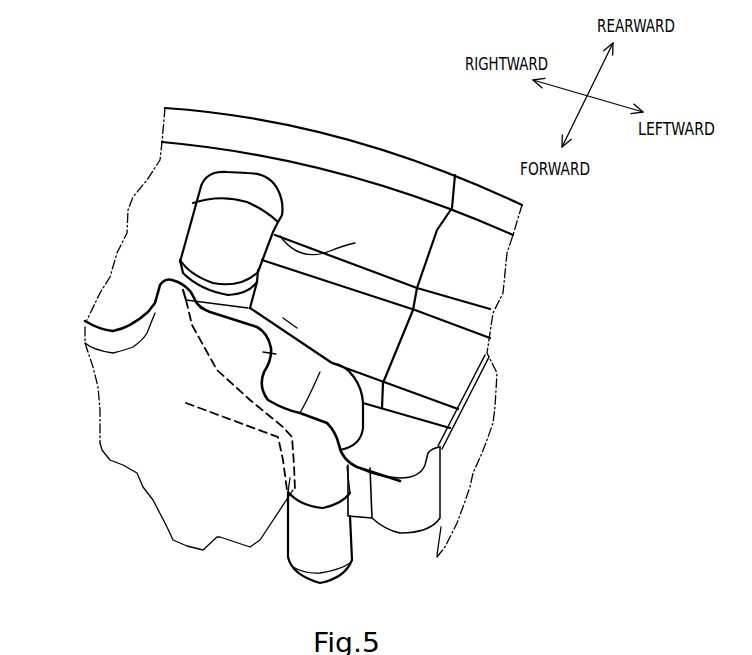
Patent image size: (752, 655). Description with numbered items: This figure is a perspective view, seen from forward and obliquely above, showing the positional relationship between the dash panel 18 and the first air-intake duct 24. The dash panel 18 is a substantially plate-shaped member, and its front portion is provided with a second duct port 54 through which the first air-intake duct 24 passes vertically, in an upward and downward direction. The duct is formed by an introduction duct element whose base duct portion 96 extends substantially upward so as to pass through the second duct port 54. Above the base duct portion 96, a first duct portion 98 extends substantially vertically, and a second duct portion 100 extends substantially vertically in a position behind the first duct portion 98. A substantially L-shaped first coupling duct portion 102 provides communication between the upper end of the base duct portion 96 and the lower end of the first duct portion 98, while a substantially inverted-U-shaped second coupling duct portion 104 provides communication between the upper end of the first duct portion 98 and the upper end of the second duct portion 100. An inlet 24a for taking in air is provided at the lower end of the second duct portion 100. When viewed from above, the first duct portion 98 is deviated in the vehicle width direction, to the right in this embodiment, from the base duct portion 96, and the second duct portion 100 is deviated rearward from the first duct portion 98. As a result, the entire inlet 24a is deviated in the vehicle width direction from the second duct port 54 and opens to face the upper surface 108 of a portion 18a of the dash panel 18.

The dash panel 18 is at (340, 134).
The portion of the dash panel 18a is at (327, 334).
The first air-intake duct 24 is at (172, 257).
The inlet 24a is at (295, 317).
The second duct port 54 is at (394, 445).
The base duct portion 96 is at (355, 450).
The first duct portion 98 is at (210, 312).
The second duct portion 100 is at (285, 228).
The first coupling duct portion 102 is at (274, 353).
The second coupling duct portion 104 is at (222, 219).
The upper surface 108 is at (298, 318).